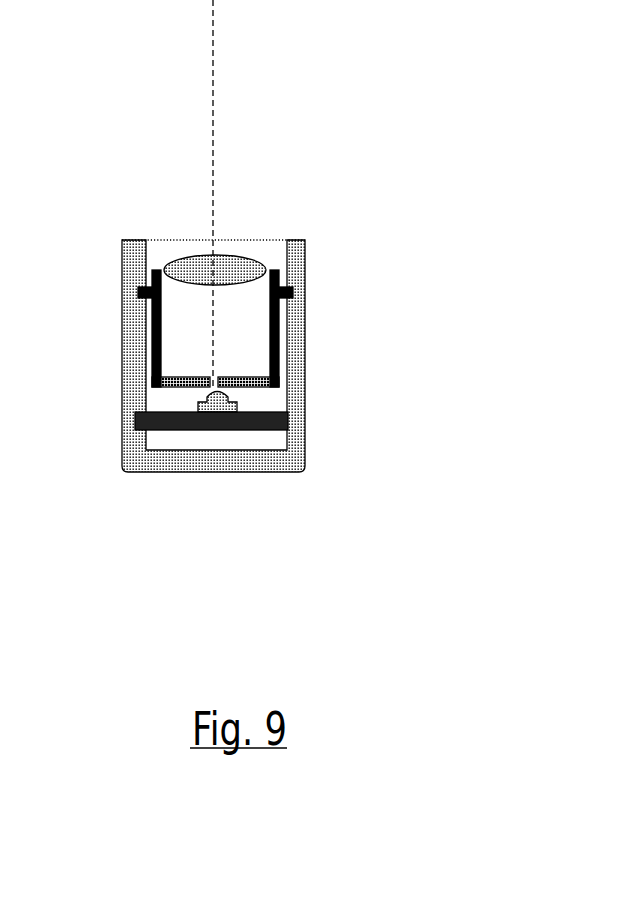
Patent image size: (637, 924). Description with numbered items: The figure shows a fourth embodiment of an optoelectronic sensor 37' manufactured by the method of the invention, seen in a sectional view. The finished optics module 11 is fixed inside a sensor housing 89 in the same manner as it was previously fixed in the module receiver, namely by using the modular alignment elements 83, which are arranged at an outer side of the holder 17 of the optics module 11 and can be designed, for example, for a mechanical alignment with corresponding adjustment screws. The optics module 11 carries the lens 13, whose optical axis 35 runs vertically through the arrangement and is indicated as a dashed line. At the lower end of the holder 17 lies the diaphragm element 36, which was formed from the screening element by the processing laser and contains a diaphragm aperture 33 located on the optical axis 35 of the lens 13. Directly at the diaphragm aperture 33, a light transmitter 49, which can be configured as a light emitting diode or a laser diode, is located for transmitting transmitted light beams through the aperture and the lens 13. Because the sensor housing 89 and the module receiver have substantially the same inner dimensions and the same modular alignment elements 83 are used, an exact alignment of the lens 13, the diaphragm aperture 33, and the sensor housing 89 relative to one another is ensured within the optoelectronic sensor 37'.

The optics module 11 is at (148, 335).
The lens 13 is at (232, 268).
The holder 17 is at (280, 340).
The diaphragm aperture 33 is at (223, 373).
The optical axis 35 is at (215, 60).
The diaphragm element 36 is at (183, 378).
The optoelectronic sensor 37' is at (311, 236).
The light transmitter 49 is at (233, 410).
The modular alignment elements 83 is at (140, 283).
The sensor housing 89 is at (215, 458).